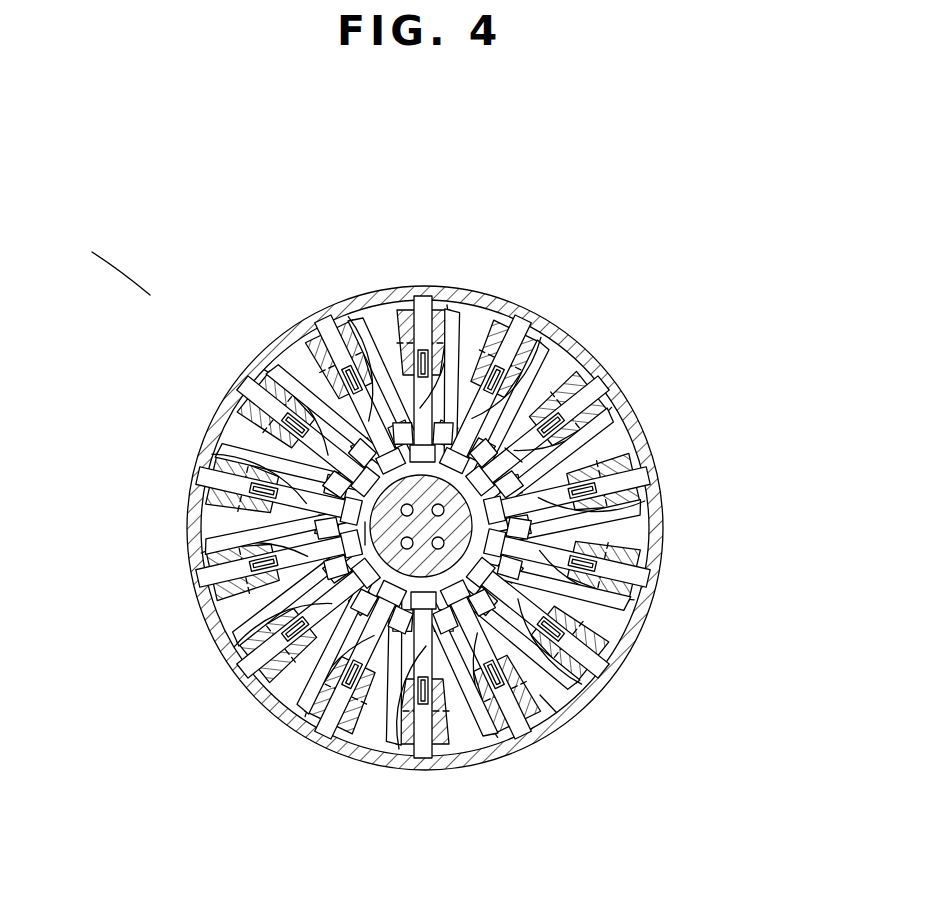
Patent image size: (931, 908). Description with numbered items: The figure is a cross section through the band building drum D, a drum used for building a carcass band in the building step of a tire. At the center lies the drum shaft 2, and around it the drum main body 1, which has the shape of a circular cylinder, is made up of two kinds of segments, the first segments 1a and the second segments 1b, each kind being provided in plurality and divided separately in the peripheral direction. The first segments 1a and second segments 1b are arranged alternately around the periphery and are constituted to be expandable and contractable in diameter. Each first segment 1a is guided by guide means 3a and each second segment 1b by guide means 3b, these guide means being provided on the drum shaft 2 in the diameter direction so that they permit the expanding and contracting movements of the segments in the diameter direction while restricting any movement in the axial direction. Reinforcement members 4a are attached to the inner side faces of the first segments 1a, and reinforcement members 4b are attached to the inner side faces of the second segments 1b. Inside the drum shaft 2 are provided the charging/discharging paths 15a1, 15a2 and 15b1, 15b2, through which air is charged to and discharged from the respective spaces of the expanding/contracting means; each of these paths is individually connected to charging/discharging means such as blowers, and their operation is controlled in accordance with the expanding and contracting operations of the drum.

The band building drum D is at (155, 298).
The drum main body 1 is at (255, 342).
The drum shaft 2 is at (455, 522).
The first segment 1a is at (463, 480).
The second segment 1b is at (400, 290).
The guide means 3a is at (540, 320).
The guide means 3b is at (467, 290).
The reinforcement member 4a is at (505, 297).
The reinforcement member 4b is at (408, 293).
The charging/discharging path 15a1 is at (405, 510).
The charging/discharging path 15a2 is at (547, 703).
The charging/discharging path 15b1 is at (375, 534).
The charging/discharging path 15b2 is at (560, 447).